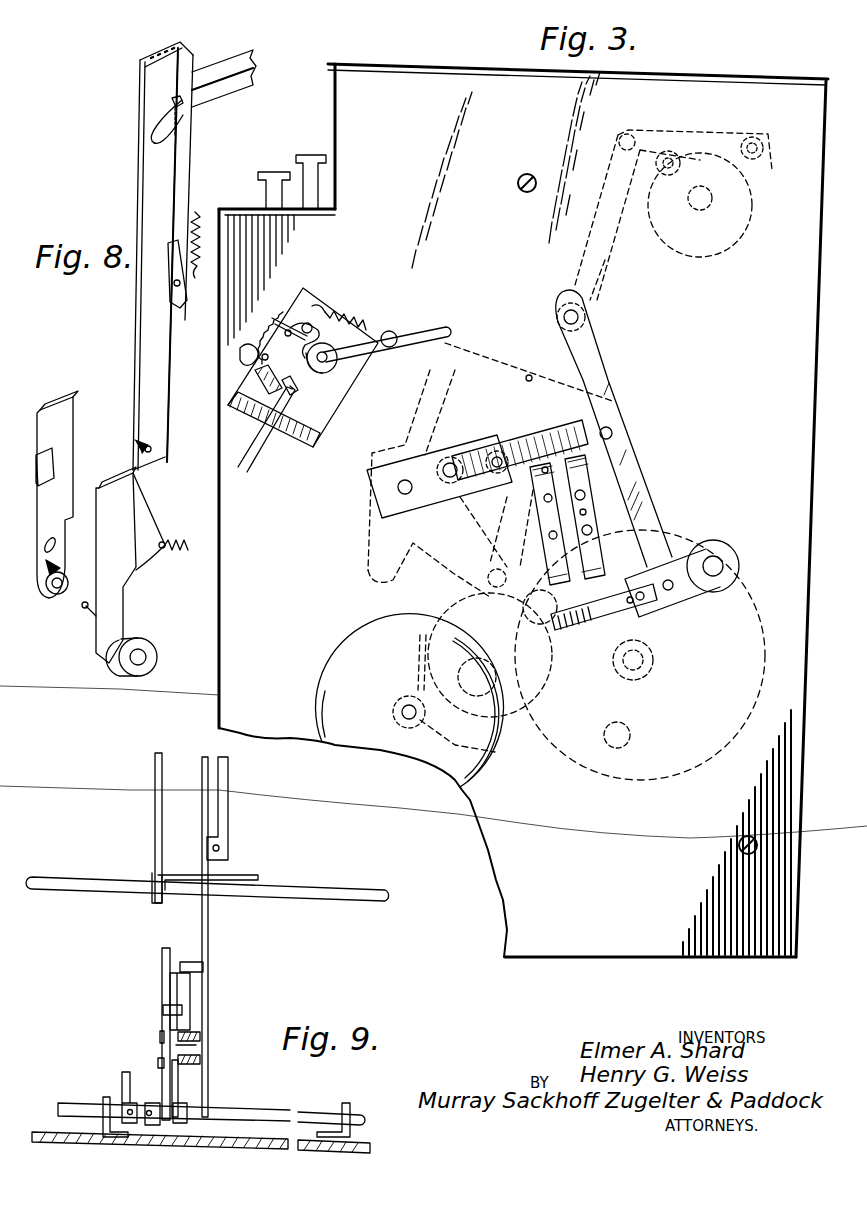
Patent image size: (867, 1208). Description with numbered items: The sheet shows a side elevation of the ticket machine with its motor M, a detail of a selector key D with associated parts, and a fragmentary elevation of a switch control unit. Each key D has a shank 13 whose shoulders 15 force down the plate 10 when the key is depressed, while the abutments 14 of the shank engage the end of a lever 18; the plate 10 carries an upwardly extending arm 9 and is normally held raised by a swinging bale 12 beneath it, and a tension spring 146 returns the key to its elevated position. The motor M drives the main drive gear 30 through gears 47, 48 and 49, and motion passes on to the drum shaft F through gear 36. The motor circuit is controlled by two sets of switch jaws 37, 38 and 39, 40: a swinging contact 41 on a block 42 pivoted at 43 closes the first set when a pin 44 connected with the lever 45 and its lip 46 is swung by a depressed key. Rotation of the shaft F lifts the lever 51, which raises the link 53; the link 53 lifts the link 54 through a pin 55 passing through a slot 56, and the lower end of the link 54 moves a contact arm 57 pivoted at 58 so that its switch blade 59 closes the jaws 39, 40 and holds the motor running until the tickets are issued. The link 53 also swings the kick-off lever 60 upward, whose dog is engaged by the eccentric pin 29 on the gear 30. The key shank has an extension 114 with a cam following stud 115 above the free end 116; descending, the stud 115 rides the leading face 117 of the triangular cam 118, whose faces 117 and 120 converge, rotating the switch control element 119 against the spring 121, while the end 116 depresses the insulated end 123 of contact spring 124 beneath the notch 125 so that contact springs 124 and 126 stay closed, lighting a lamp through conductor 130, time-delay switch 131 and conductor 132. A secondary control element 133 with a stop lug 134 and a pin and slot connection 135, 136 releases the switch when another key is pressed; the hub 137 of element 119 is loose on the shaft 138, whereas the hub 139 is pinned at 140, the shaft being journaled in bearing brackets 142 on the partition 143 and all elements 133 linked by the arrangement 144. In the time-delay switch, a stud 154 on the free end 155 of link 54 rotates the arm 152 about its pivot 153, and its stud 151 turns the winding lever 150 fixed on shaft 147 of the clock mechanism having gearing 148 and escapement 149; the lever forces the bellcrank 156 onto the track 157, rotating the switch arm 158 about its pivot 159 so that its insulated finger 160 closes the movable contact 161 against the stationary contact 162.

In FIG. 3, the selector key D is at (300, 152).
In FIG. 3, the drum shaft F is at (712, 198).
In FIG. 3, the motor M is at (325, 720).
In FIG. 9, the arm 9 is at (155, 794).
In FIG. 9, the plate 10 is at (172, 872).
In FIG. 8, the swinging bale 12 is at (224, 78).
In FIG. 9, the swinging bale 12 is at (350, 895).
In FIG. 8, the key shank 13 is at (155, 75).
In FIG. 8, the abutments 14 is at (172, 103).
In FIG. 8, the shoulders 15 is at (178, 305).
In FIG. 9, the shoulders 15 is at (222, 858).
In FIG. 8, the lever 18 is at (155, 138).
In FIG. 3, the eccentric pin 29 is at (622, 748).
In FIG. 3, the main drive gear 30 is at (700, 772).
In FIG. 3, the gear 36 is at (725, 245).
In FIG. 3, the switch jaw 37 is at (500, 482).
In FIG. 3, the switch jaw 38 is at (590, 478).
In FIG. 3, the switch jaw 39 is at (547, 562).
In FIG. 3, the switch jaw 40 is at (605, 592).
In FIG. 3, the swinging contact 41 is at (528, 432).
In FIG. 3, the block 42 is at (425, 455).
In FIG. 3, the pivot 43 is at (397, 488).
In FIG. 3, the pin 44 is at (450, 462).
In FIG. 3, the lever 45 is at (395, 432).
In FIG. 3, the lip 46 is at (520, 345).
In FIG. 3, the gear 47 is at (398, 704).
In FIG. 3, the gear 48 is at (418, 650).
In FIG. 3, the gear 49 is at (470, 690).
In FIG. 3, the lever 51 is at (700, 135).
In FIG. 3, the link 53 is at (612, 265).
In FIG. 3, the link 54 is at (612, 390).
In FIG. 3, the pin 55 is at (580, 318).
In FIG. 3, the slot 56 is at (560, 298).
In FIG. 3, the swinging contact arm 57 is at (685, 604).
In FIG. 3, the pivot 58 is at (720, 560).
In FIG. 3, the switch blade 59 is at (604, 607).
In FIG. 3, the kick-off lever 60 is at (448, 578).
In FIG. 8, the shank extension 114 is at (143, 391).
In FIG. 9, the shank extension 114 is at (208, 916).
In FIG. 8, the cam following stud 115 is at (143, 453).
In FIG. 9, the cam following stud 115 is at (195, 962).
In FIG. 8, the free end 116 is at (152, 462).
In FIG. 8, the leading cam face 117 is at (150, 505).
In FIG. 8, the triangular cam 118 is at (150, 522).
In FIG. 9, the triangular cam 118 is at (190, 987).
In FIG. 8, the switch control element 119 is at (125, 577).
In FIG. 9, the switch control element 119 is at (180, 1079).
In FIG. 8, the cam face 120 is at (138, 540).
In FIG. 9, the cam face 120 is at (184, 1000).
In FIG. 8, the spring 121 is at (150, 562).
In FIG. 9, the insulated forward end 123 is at (198, 1034).
In FIG. 9, the movable switch contact spring 124 is at (200, 1044).
In FIG. 8, the notch or dog 125 is at (130, 592).
In FIG. 9, the contact spring 126 is at (198, 1058).
In FIG. 3, the conductor 130 is at (262, 424).
In FIG. 3, the time-delay switch 131 is at (316, 432).
In FIG. 3, the conductor 132 is at (262, 460).
In FIG. 8, the secondary switch control element 133 is at (96, 480).
In FIG. 9, the secondary switch control element 133 is at (162, 983).
In FIG. 8, the stop lug 134 is at (50, 468).
In FIG. 9, the stop lug 134 is at (163, 1010).
In FIG. 8, the pin 135 is at (84, 608).
In FIG. 9, the pin 135 is at (158, 1063).
In FIG. 8, the slot 136 is at (54, 542).
In FIG. 8, the hub 137 is at (150, 644).
In FIG. 9, the hub 137 is at (188, 1120).
In FIG. 9, the cam shaft 138 is at (270, 1113).
In FIG. 8, the hub 139 is at (56, 582).
In FIG. 9, the hub 139 is at (155, 1123).
In FIG. 9, the pin or key 140 is at (150, 1104).
In FIG. 9, the bearing brackets 142 is at (106, 1097).
In FIG. 9, the partition 143 is at (372, 1146).
In FIG. 9, the link and connecting rod arrangement 144 is at (125, 1072).
In FIG. 8, the tension spring 146 is at (200, 225).
In FIG. 3, the spring winding shaft 147 is at (340, 360).
In FIG. 3, the gearing 148 is at (286, 318).
In FIG. 3, the escapement 149 is at (262, 336).
In FIG. 3, the lever 150 is at (446, 326).
In FIG. 3, the stud 151 is at (390, 330).
In FIG. 3, the beam or arm 152 is at (528, 372).
In FIG. 3, the pivot 153 is at (545, 385).
In FIG. 3, the stud 154 is at (614, 433).
In FIG. 3, the free end 155 is at (625, 405).
In FIG. 3, the spring-urged bellcrank 156 is at (318, 302).
In FIG. 3, the track portion 157 is at (312, 376).
In FIG. 3, the switch arm 158 is at (272, 322).
In FIG. 3, the pivot 159 is at (283, 345).
In FIG. 3, the insulated finger 160 is at (256, 380).
In FIG. 3, the movable contact 161 is at (250, 394).
In FIG. 3, the stationary contact 162 is at (296, 400).